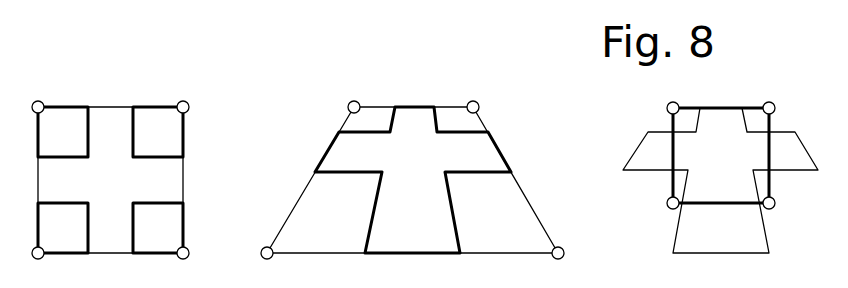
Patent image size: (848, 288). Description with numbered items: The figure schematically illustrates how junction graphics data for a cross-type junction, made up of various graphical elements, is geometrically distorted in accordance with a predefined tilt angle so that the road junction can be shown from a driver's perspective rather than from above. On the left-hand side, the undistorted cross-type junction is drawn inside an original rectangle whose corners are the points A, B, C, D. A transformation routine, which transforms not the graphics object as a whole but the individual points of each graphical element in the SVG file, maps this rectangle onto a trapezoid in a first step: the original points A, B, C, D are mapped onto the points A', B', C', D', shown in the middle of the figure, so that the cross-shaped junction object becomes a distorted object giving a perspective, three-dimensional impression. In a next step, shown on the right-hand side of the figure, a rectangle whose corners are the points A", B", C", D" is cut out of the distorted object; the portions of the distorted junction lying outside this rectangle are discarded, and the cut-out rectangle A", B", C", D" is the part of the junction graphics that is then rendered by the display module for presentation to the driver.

The original rectangle point A is at (29, 254).
The original rectangle point B is at (29, 109).
The original rectangle point C is at (195, 109).
The original rectangle point D is at (196, 254).
The mapped trapezoid point A' is at (256, 252).
The mapped trapezoid point B' is at (343, 107).
The mapped trapezoid point C' is at (488, 107).
The mapped trapezoid point D' is at (573, 252).
The cut-out rectangle point A" A'' is at (660, 204).
The cut-out rectangle point B" B'' is at (660, 107).
The cut-out rectangle point C" C'' is at (787, 107).
The cut-out rectangle point D" D'' is at (787, 204).